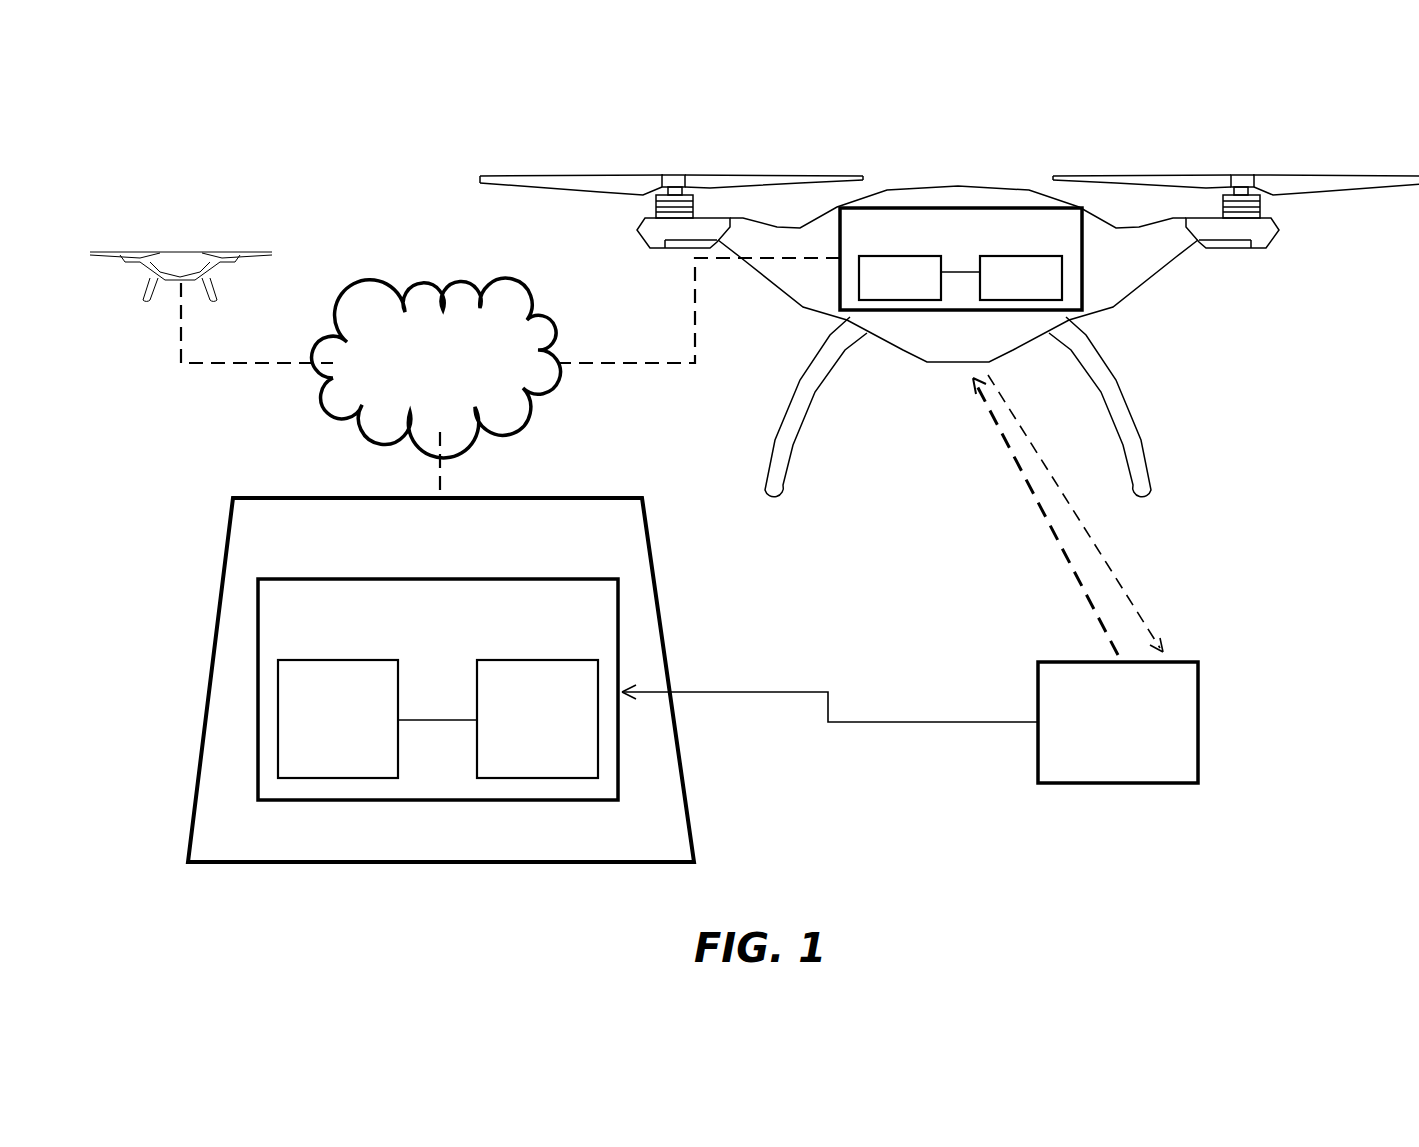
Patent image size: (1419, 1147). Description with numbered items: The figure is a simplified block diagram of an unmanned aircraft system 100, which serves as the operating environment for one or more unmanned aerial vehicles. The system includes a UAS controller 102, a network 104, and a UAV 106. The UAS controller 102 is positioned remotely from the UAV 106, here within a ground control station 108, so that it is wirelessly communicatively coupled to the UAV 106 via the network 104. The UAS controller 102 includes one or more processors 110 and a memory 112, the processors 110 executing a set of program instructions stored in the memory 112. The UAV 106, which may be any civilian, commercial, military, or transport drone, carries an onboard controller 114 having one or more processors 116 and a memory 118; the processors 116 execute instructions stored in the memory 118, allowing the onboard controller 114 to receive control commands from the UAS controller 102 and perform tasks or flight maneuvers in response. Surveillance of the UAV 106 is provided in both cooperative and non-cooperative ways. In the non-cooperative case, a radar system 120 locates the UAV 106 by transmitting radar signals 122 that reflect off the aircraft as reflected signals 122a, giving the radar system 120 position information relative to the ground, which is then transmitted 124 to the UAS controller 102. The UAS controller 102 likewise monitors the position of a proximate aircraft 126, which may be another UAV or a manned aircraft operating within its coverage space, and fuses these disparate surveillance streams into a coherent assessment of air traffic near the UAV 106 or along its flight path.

The unmanned aircraft system 100 is at (188, 150).
The UAS controller 102 is at (418, 618).
The network 104 is at (443, 305).
The unmanned aerial vehicle 106 is at (1157, 282).
The ground control station 108 is at (271, 546).
The processors 110 is at (319, 735).
The memory 112 is at (518, 735).
The onboard controller 114 is at (941, 240).
The processors 116 is at (881, 292).
The memory 118 is at (1002, 292).
The radar system 120 is at (1099, 735).
The radar signals 122 is at (1033, 493).
The reflected radar signals 122a is at (1103, 552).
The position information transmission 124 is at (880, 722).
The proximate aircraft 126 is at (143, 268).